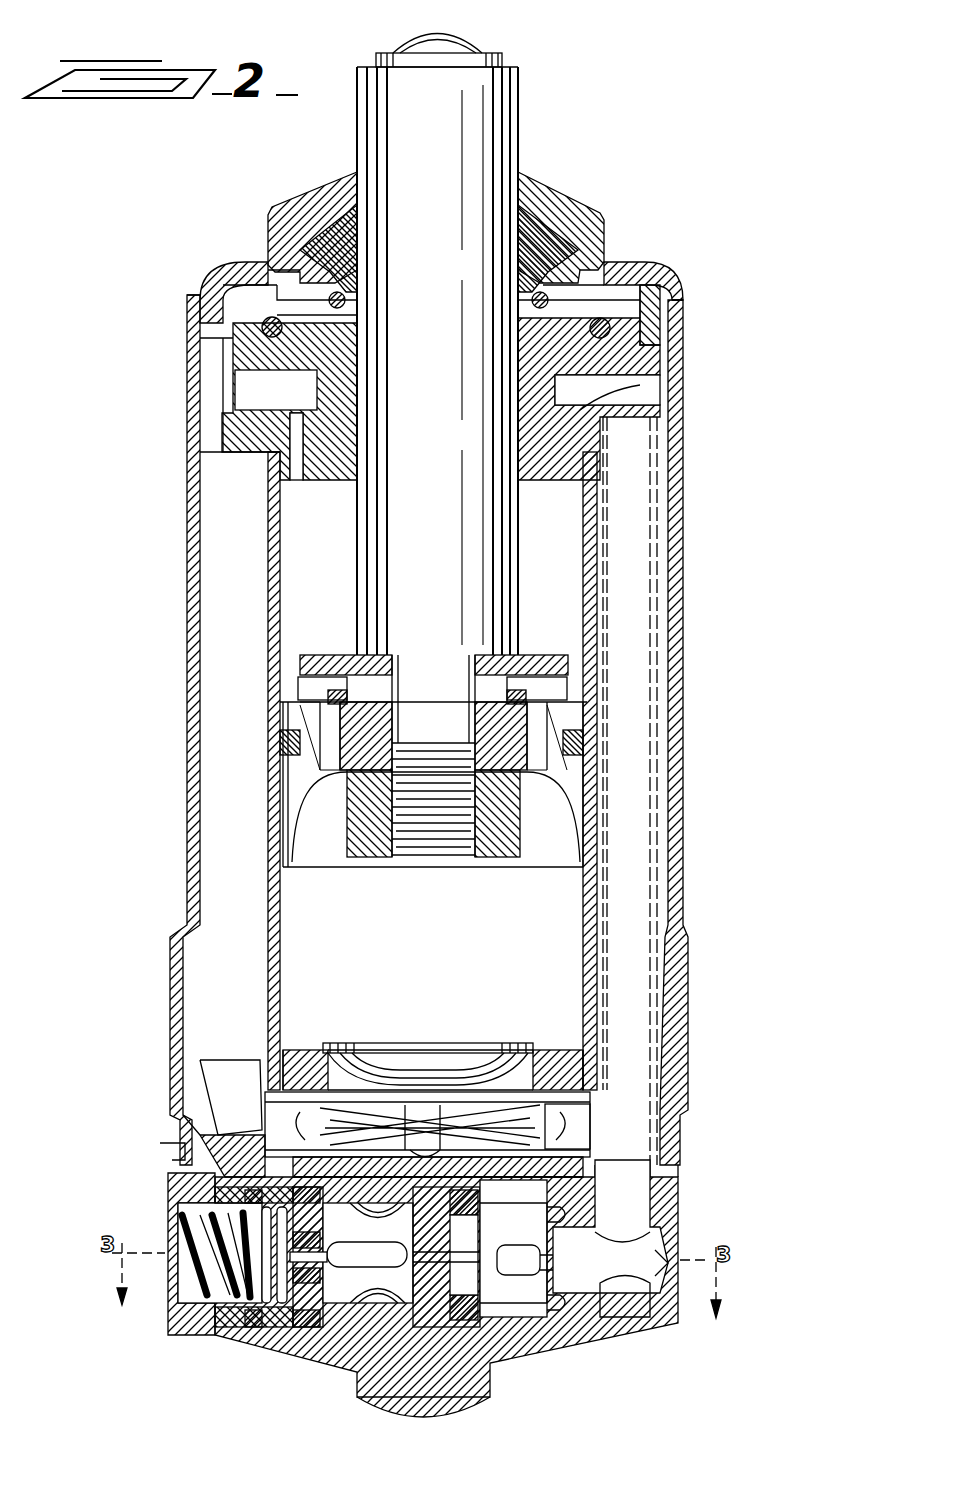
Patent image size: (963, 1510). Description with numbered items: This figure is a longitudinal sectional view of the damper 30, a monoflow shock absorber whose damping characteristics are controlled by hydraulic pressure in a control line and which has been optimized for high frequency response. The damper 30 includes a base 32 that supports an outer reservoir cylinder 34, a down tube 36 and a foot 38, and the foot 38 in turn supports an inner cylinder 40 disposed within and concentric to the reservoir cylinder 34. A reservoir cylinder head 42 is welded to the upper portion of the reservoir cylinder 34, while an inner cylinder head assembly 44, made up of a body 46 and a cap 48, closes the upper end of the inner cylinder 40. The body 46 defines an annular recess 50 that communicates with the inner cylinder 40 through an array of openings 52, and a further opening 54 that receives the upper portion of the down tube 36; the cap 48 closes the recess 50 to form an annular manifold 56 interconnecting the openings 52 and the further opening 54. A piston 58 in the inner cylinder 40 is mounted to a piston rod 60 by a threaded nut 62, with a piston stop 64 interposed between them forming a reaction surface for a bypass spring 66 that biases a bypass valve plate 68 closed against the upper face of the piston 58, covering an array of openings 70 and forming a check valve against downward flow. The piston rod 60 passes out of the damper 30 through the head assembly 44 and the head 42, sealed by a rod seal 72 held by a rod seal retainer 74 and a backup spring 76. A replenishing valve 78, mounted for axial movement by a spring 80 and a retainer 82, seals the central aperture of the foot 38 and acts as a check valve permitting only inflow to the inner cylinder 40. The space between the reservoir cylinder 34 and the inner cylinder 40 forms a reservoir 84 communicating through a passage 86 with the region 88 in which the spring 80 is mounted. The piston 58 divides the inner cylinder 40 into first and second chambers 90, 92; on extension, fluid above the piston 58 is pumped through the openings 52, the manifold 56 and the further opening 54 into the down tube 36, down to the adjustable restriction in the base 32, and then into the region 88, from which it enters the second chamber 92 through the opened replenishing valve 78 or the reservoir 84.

The damper 30 is at (155, 690).
The base 32 is at (245, 1165).
The outer reservoir cylinder 34 is at (187, 797).
The down tube 36 is at (662, 723).
The foot 38 is at (562, 1045).
The inner cylinder 40 is at (272, 884).
The reservoir cylinder head 42 is at (545, 190).
The inner cylinder head assembly 44 is at (620, 292).
The body 46 is at (540, 470).
The cap 48 is at (626, 335).
The annular recess 50 is at (660, 387).
The openings 52 is at (302, 462).
The further opening 54 is at (653, 454).
The annular manifold 56 is at (292, 405).
The piston 58 is at (293, 775).
The piston rod 60 is at (405, 573).
The threaded nut 62 is at (372, 833).
The piston stop 64 is at (333, 655).
The bypass spring 66 is at (567, 677).
The bypass valve plate 68 is at (563, 698).
The openings 70 is at (533, 723).
The rod seal 72 is at (590, 233).
The rod seal retainer 74 is at (305, 265).
The backup spring 76 is at (270, 316).
The replenishing valve 78 is at (352, 1048).
The spring 80 is at (275, 1094).
The retainer 82 is at (298, 1120).
The reservoir 84 is at (247, 683).
The passage 86 is at (257, 1125).
The region 88 is at (585, 1120).
The first chamber 90 is at (566, 591).
The second chamber 92 is at (457, 963).